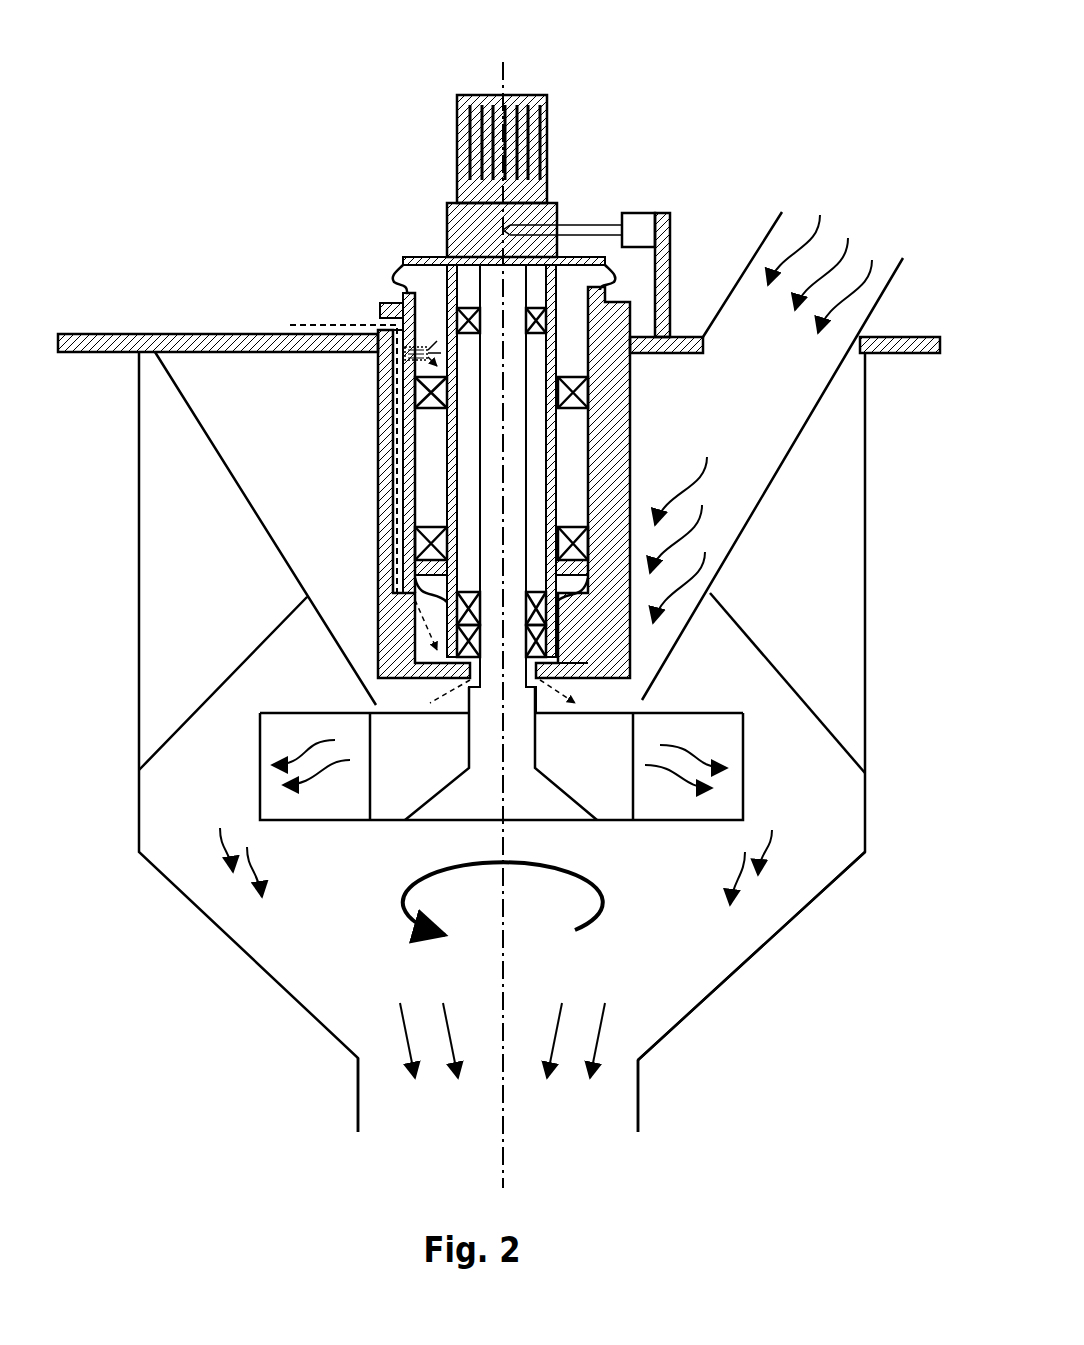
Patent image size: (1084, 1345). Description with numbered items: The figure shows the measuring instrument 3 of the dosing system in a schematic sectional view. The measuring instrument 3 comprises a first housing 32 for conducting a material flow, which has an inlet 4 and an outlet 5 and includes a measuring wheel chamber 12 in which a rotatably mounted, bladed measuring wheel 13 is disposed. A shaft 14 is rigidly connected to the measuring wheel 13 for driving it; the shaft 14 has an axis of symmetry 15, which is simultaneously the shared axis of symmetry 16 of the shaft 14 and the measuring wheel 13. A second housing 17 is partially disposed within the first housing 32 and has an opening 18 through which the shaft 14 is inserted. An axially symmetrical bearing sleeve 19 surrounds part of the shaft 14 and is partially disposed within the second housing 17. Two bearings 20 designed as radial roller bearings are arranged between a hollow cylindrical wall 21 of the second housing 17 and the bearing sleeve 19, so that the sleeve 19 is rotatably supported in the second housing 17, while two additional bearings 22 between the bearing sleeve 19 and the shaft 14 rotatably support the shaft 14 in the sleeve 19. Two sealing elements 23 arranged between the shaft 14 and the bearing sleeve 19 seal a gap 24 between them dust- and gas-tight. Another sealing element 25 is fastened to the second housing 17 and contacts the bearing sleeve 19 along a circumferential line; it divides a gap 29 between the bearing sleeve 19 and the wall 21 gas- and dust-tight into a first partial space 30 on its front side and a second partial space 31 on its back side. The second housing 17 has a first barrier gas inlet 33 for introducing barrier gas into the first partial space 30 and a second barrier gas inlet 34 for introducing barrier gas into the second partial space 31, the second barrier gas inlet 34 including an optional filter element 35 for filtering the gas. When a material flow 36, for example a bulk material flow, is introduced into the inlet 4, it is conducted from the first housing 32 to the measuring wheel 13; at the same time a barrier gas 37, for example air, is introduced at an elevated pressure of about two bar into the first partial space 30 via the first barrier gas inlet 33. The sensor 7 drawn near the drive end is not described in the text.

The measuring instrument 3 is at (195, 98).
The inlet 4 is at (782, 212).
The outlet 5 is at (358, 1100).
The sensor 7 is at (605, 222).
The measuring wheel chamber 12 is at (210, 895).
The measuring wheel 13 is at (622, 822).
The shaft 14 is at (527, 355).
The axis of symmetry 15 is at (502, 1158).
The shared axis of symmetry 16 is at (502, 1158).
The second housing 17 is at (378, 422).
The opening 18 is at (542, 680).
The bearing sleeve 19 is at (558, 428).
The bearings 20 is at (405, 420).
The wall 21 is at (378, 535).
The additional bearings 22 is at (467, 337).
The sealing elements 23 is at (548, 648).
The gap 24 is at (533, 273).
The sealing element 25 is at (570, 628).
The gap 29 is at (578, 459).
The first partial space 30 is at (423, 655).
The second partial space 31 is at (630, 325).
The first housing 32 is at (785, 928).
The first barrier gas inlet 33 is at (378, 620).
The second barrier gas inlet 34 is at (378, 357).
The filter element 35 is at (418, 345).
The material flow 36 is at (820, 228).
The barrier gas 37 is at (305, 325).